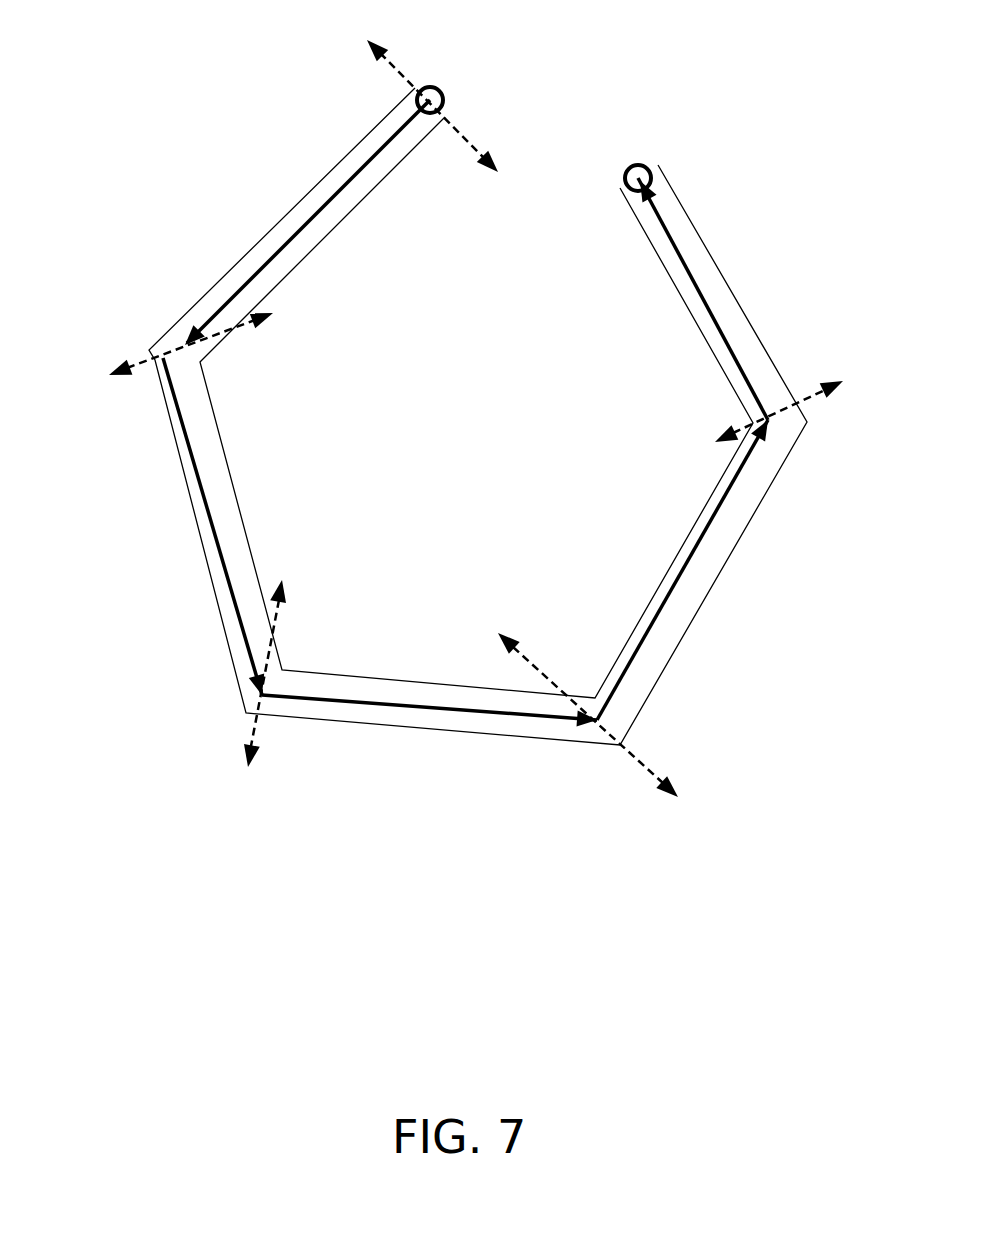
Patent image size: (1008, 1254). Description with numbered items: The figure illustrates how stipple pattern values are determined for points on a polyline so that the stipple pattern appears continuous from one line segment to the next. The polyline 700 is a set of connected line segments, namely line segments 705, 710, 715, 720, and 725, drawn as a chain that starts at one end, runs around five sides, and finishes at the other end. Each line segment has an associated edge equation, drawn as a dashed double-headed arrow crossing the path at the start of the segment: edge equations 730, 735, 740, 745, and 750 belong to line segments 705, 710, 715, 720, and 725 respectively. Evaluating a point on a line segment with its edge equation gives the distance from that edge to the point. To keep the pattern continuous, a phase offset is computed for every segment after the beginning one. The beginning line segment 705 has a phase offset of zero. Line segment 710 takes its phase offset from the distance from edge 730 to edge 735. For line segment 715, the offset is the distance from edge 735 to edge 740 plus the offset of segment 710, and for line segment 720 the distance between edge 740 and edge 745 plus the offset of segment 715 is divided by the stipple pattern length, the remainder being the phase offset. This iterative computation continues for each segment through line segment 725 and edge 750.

The polyline 700 is at (478, 416).
The line segment 705 is at (270, 230).
The line segment 710 is at (198, 542).
The line segment 715 is at (407, 728).
The line segment 720 is at (685, 645).
The line segment 725 is at (758, 338).
The edge equation 730 is at (405, 90).
The edge equation 735 is at (156, 353).
The edge equation 740 is at (252, 695).
The edge equation 745 is at (613, 731).
The edge equation 750 is at (808, 404).